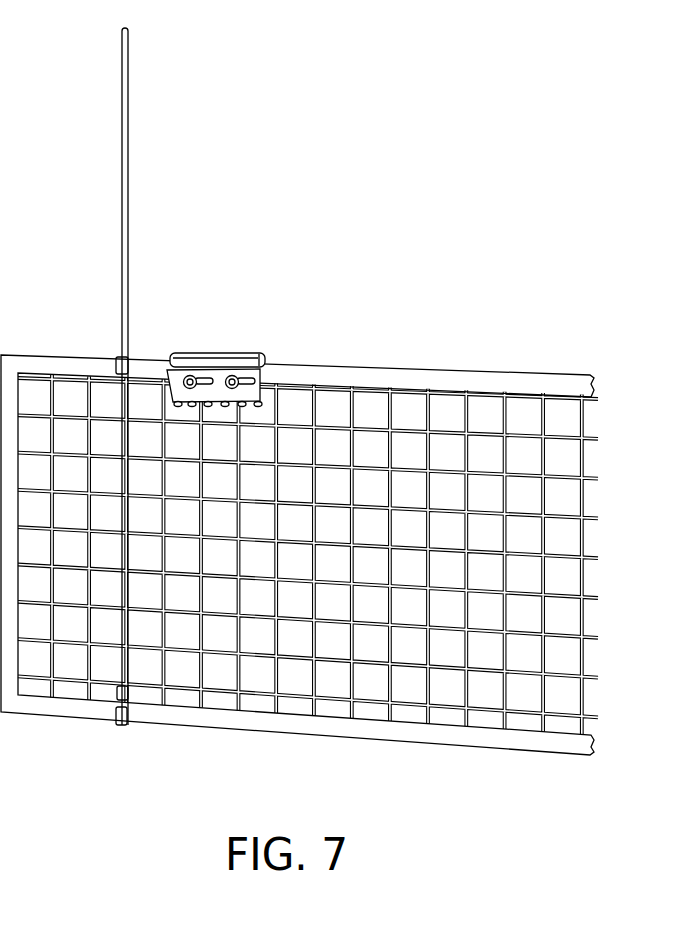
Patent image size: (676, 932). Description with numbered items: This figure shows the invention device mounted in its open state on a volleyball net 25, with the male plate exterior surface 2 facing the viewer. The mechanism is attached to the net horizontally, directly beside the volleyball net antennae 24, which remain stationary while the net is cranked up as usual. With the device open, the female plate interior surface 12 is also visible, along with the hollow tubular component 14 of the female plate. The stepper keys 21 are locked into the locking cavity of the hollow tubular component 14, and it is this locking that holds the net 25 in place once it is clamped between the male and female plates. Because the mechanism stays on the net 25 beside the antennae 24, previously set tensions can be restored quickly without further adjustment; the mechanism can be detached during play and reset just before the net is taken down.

The male plate exterior surface 2 is at (263, 402).
The female plate interior surface 12 is at (254, 398).
The hollow tubular component 14 is at (178, 352).
The stepper key 21 is at (250, 375).
The volleyball net antennae 24 is at (128, 216).
The volleyball net 25 is at (72, 718).